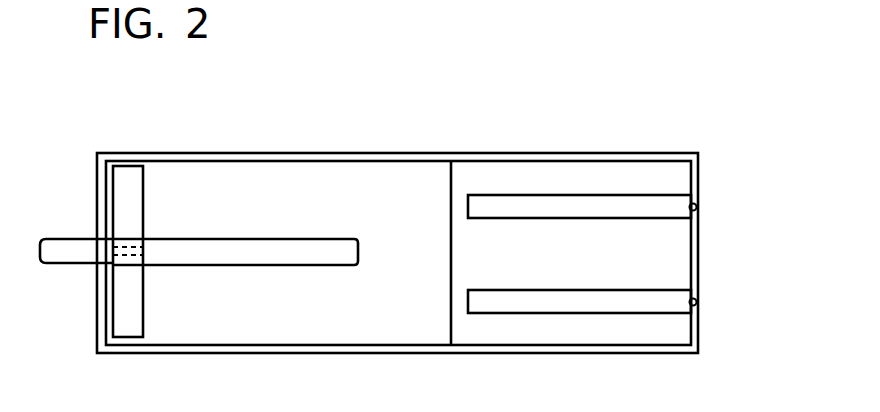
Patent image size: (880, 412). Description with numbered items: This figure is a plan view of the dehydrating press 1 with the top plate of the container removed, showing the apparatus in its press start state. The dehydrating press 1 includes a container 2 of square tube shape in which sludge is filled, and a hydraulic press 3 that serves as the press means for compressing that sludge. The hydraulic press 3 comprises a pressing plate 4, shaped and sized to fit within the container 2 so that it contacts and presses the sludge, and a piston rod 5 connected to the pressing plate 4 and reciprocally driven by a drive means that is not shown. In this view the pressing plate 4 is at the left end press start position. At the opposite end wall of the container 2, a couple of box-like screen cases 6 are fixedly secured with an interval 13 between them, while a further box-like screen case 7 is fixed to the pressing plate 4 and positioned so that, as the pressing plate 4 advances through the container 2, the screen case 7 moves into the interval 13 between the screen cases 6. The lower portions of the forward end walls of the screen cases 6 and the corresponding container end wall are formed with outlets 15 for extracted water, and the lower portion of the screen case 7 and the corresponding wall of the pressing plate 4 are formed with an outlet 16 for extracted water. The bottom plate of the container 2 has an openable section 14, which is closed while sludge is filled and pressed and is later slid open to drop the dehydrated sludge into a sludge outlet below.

The dehydrating press 1 is at (681, 120).
The container 2 is at (390, 152).
The hydraulic press 3 is at (157, 220).
The pressing plate 4 is at (128, 177).
The piston rod 5 is at (67, 245).
The screen cases 6 is at (552, 208).
The screen case 7 is at (297, 248).
The interval 13 is at (592, 238).
The openable section 14 is at (507, 172).
The outlets 15 is at (698, 301).
The outlet 16 is at (128, 257).